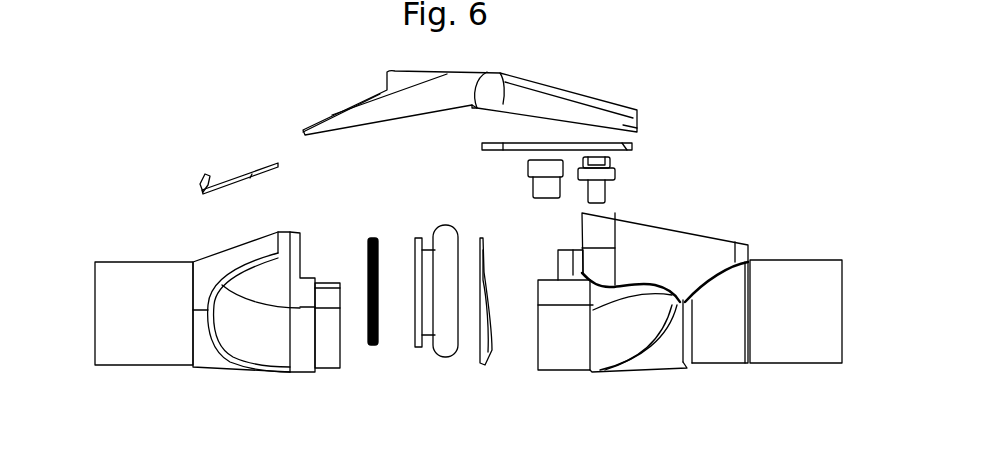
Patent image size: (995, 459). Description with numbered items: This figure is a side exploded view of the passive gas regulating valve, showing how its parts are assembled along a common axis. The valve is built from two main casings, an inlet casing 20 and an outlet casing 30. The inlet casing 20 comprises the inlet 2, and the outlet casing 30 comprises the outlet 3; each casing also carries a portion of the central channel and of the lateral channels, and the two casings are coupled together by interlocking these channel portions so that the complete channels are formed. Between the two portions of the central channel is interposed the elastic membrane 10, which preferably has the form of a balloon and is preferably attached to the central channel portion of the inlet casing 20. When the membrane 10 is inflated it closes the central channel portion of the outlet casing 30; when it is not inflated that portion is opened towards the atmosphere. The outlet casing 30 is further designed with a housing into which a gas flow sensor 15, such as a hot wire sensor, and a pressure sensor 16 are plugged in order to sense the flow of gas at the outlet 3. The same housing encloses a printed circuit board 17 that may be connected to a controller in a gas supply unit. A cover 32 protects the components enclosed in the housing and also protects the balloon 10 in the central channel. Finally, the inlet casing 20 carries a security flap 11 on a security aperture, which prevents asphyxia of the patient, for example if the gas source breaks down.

The inlet 2 is at (133, 345).
The outlet 3 is at (795, 342).
The elastic membrane 10 is at (447, 357).
The security flap 11 is at (232, 177).
The gas flow sensor 15 is at (543, 168).
The pressure sensor 16 is at (618, 172).
The printed circuit board 17 is at (632, 143).
The inlet casing 20 is at (233, 373).
The outlet casing 30 is at (708, 373).
The cover 32 is at (567, 93).